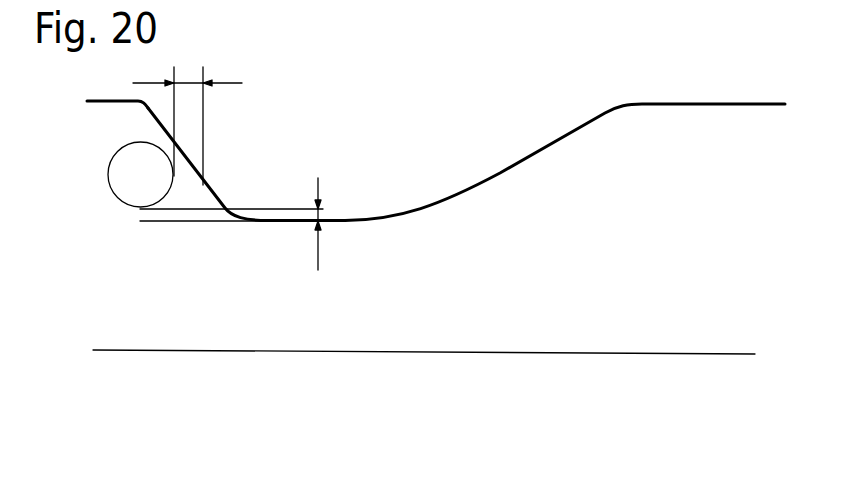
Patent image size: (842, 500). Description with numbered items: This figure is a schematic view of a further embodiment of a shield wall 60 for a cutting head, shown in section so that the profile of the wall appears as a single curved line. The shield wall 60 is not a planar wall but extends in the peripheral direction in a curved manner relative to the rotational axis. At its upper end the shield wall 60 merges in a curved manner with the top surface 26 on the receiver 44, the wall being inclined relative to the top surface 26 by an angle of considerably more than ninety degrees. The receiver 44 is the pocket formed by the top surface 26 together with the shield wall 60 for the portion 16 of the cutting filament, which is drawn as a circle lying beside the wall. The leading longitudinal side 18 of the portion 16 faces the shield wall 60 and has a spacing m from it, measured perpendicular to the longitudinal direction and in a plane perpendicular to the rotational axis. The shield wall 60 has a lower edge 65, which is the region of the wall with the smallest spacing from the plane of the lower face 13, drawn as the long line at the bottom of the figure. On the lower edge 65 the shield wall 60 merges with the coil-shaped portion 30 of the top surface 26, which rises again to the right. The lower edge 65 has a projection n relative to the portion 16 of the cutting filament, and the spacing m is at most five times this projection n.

The top surface 26 is at (88, 107).
The receiver 44 is at (115, 123).
The leading longitudinal side 18 is at (174, 175).
The portion of the cutting filament 16 is at (125, 187).
The shield wall 60 is at (210, 192).
The lower edge 65 is at (265, 221).
The coil-shaped portion 30 is at (522, 164).
The lower face 13 is at (637, 354).
The spacing m is at (201, 117).
The projection n is at (322, 212).